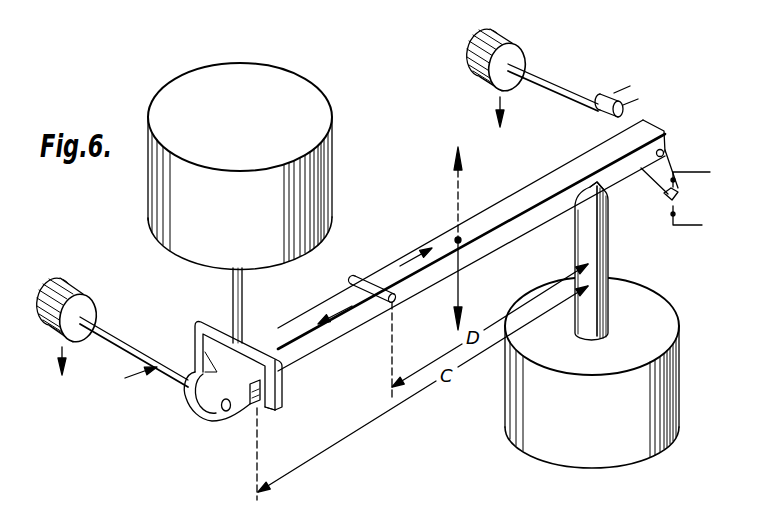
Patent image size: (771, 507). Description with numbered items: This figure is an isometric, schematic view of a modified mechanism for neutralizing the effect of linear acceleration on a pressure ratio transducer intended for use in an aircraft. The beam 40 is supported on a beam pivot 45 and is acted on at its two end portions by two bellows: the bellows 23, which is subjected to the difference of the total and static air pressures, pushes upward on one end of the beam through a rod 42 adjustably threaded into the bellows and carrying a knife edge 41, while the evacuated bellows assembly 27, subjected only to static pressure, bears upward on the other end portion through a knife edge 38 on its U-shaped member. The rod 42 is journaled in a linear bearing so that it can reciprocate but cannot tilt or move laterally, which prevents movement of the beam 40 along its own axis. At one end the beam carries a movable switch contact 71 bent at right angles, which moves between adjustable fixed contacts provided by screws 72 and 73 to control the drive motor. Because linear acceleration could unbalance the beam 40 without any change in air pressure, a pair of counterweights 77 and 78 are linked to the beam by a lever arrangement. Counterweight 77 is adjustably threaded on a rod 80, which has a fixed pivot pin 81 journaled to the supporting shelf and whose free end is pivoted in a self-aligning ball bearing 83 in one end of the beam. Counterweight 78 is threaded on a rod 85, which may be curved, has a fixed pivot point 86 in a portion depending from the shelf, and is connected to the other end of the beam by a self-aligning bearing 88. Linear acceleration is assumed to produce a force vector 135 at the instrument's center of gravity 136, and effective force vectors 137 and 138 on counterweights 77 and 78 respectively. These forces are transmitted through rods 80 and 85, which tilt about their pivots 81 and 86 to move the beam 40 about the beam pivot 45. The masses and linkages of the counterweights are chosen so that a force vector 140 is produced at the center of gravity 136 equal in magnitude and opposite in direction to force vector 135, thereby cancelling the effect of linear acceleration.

The bellows 23 is at (680, 370).
The evacuated bellows assembly 27 is at (303, 88).
The knife edge 38 is at (255, 404).
The beam 40 is at (349, 332).
The knife edge 41 is at (601, 185).
The rod 42 is at (608, 238).
The beam pivot 45 is at (361, 283).
The movable switch contact 71 is at (678, 195).
The screw 72 is at (675, 214).
The screw 73 is at (675, 181).
The counterweight 77 is at (82, 297).
The counterweight 78 is at (524, 61).
The rod 80 is at (115, 337).
The pin 81 is at (158, 374).
The self-aligning ball bearing 83 is at (220, 422).
The rod 85 is at (582, 76).
The fixed pivot point 86 is at (604, 102).
The self-aligning bearing 88 is at (668, 178).
The force vector 135 is at (460, 292).
The center of gravity 136 is at (456, 237).
The force vector 137 is at (63, 372).
The force vector 138 is at (497, 112).
The force vector 140 is at (456, 180).